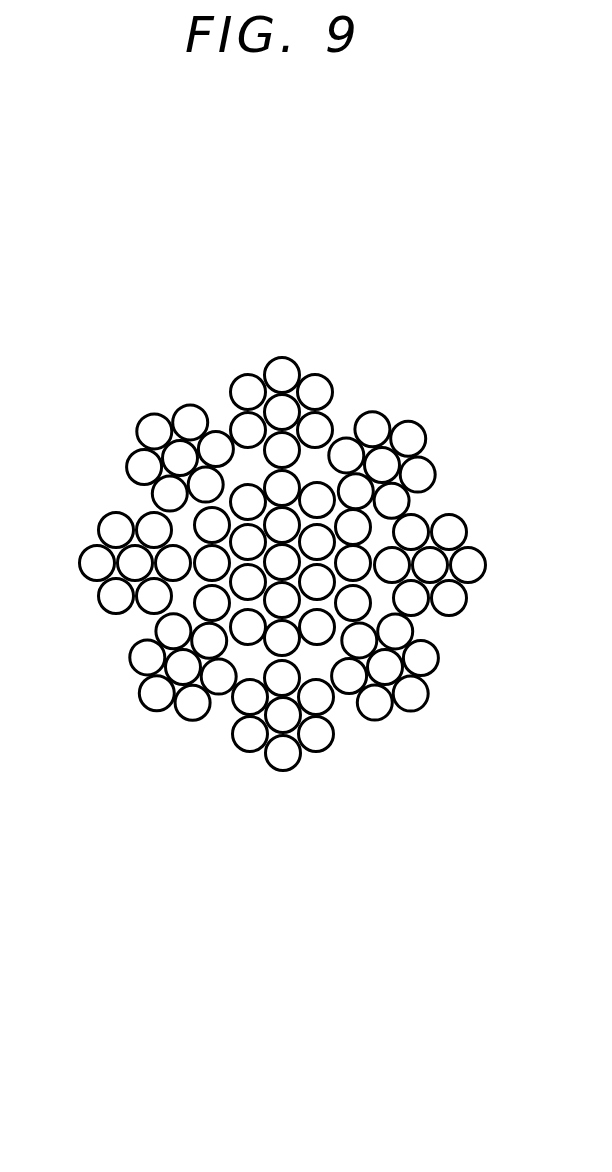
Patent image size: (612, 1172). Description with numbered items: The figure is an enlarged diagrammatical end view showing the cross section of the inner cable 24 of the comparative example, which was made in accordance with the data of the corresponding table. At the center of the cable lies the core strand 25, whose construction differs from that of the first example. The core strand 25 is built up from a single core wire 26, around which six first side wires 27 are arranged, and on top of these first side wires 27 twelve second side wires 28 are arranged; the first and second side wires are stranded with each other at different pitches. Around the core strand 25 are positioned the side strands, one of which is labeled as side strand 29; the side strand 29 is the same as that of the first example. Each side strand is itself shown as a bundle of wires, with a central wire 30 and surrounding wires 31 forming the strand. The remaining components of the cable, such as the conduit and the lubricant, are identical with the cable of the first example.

The inner cable 24 is at (289, 1002).
The core strand 25 is at (171, 160).
The core wire 26 is at (278, 562).
The first side wires 27 is at (277, 523).
The second side wires 28 is at (277, 487).
The side strand 29 is at (346, 828).
The center wire of outer strand 30 is at (283, 717).
The outer wire of outer strand 31 is at (250, 703).